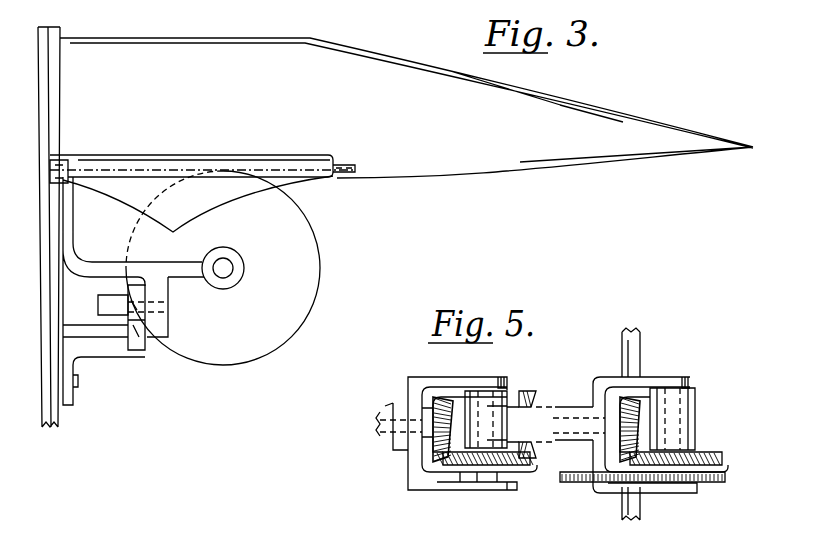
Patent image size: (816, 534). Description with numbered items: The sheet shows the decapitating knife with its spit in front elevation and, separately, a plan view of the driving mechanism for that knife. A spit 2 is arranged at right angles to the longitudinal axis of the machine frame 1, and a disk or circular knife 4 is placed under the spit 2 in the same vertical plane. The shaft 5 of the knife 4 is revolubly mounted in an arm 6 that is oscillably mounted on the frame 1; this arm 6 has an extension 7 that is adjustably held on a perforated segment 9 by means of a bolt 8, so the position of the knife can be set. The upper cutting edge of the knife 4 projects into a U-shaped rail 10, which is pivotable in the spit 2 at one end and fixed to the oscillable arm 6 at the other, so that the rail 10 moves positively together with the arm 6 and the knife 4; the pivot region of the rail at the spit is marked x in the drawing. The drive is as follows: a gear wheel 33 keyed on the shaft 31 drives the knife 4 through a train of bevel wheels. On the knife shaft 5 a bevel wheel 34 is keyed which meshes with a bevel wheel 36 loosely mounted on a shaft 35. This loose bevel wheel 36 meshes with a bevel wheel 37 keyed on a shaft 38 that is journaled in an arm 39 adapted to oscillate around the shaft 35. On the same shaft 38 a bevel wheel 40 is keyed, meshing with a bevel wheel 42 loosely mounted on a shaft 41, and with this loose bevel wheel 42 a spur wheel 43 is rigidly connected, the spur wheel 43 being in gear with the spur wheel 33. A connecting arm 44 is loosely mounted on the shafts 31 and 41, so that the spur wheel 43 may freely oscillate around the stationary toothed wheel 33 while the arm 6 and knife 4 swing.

In FIG. 3, the machine frame 1 is at (45, 333).
In FIG. 3, the spit 2 is at (244, 40).
In FIG. 3, the circular knife 4 is at (312, 255).
In FIG. 3, the knife shaft 5 is at (232, 270).
In FIG. 5, the knife shaft 5 is at (386, 420).
In FIG. 3, the oscillable arm 6 is at (150, 271).
In FIG. 5, the oscillable arm 6 is at (401, 408).
In FIG. 3, the extension 7 is at (166, 331).
In FIG. 3, the bolt 8 is at (98, 304).
In FIG. 3, the perforated segment 9 is at (146, 348).
In FIG. 3, the U-shaped rail 10 is at (126, 165).
In FIG. 3, the pivot point x is at (333, 178).
In FIG. 5, the shaft 31 is at (641, 355).
In FIG. 5, the gear wheel 33 is at (576, 484).
In FIG. 5, the bevel wheel 34 is at (437, 398).
In FIG. 5, the shaft 35 is at (488, 395).
In FIG. 5, the bevel wheel 36 is at (460, 468).
In FIG. 5, the bevel wheel 37 is at (524, 393).
In FIG. 5, the shaft 38 is at (573, 418).
In FIG. 5, the arm 39 is at (545, 407).
In FIG. 5, the bevel wheel 40 is at (622, 447).
In FIG. 5, the shaft 41 is at (680, 386).
In FIG. 5, the bevel wheel 42 is at (708, 455).
In FIG. 5, the spur wheel 43 is at (704, 484).
In FIG. 5, the connecting arm 44 is at (698, 410).